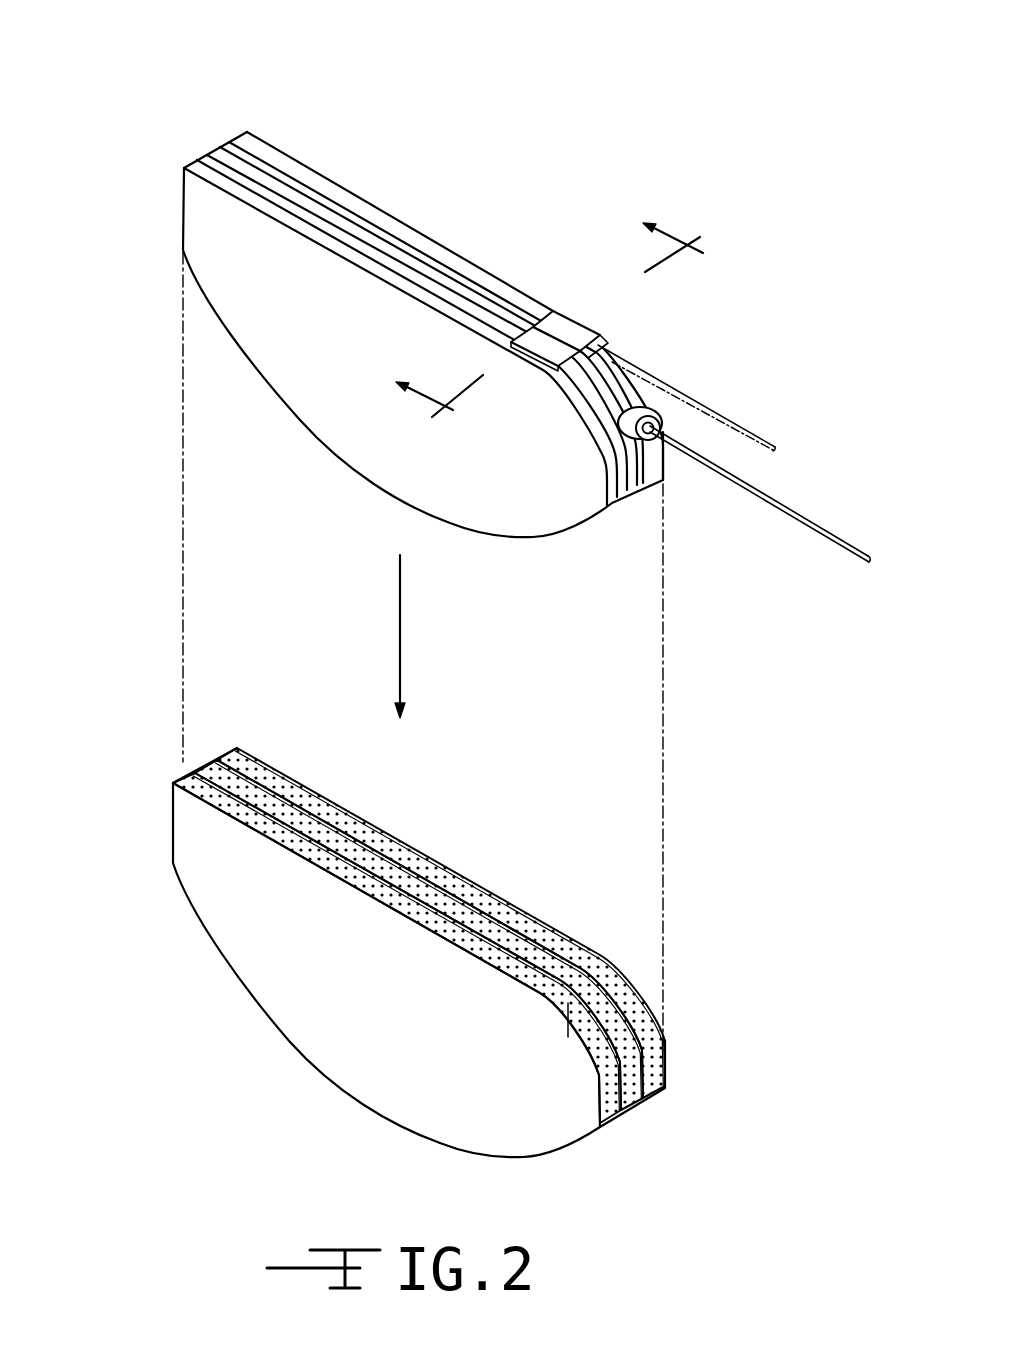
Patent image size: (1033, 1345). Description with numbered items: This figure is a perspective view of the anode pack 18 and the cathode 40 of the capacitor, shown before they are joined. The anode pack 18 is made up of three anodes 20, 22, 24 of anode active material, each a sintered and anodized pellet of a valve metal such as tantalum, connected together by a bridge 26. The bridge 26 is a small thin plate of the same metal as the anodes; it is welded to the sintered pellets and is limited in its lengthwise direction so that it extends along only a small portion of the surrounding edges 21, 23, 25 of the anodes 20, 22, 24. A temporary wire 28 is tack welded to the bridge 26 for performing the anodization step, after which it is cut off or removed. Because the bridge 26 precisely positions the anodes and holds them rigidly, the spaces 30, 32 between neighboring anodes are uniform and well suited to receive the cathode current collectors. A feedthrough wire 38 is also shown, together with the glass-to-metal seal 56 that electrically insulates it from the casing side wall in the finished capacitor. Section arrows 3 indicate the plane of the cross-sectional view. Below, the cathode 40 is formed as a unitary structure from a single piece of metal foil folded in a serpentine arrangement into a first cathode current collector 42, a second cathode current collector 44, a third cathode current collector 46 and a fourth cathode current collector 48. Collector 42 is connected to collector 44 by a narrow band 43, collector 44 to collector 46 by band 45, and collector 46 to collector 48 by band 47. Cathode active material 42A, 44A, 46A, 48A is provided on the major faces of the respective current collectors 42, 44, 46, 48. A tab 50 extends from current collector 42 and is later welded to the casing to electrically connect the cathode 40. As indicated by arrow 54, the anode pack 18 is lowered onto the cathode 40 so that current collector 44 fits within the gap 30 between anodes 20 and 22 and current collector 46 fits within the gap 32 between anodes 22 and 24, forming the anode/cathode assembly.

The anode pack 18 is at (466, 168).
The anode 20 is at (188, 162).
The surrounding edge 21 is at (398, 278).
The anode 22 is at (210, 145).
The surrounding edge 23 is at (391, 250).
The anode 24 is at (238, 133).
The surrounding edge 25 is at (478, 268).
The bridge 26 is at (575, 318).
The temporary wire 28 is at (710, 407).
The space 30 is at (293, 210).
The space 32 is at (328, 198).
The feedthrough wire 38 is at (745, 500).
The glass-to-metal seal 56 is at (640, 415).
The arrow 54 is at (400, 612).
The section line 3- 3 is at (538, 310).
The cathode 40 is at (440, 835).
The first cathode current collector 42 is at (260, 858).
The cathode active material 42A is at (285, 962).
The band 43 is at (183, 777).
The second cathode current collector 44 is at (227, 805).
The cathode active material 44A is at (265, 803).
The band 45 is at (632, 1090).
The third cathode current collector 46 is at (483, 882).
The cathode active material 46A is at (333, 830).
The band 47 is at (220, 750).
The fourth cathode current collector 48 is at (538, 907).
The cathode active material 48A is at (558, 942).
The tab 50 is at (572, 1023).